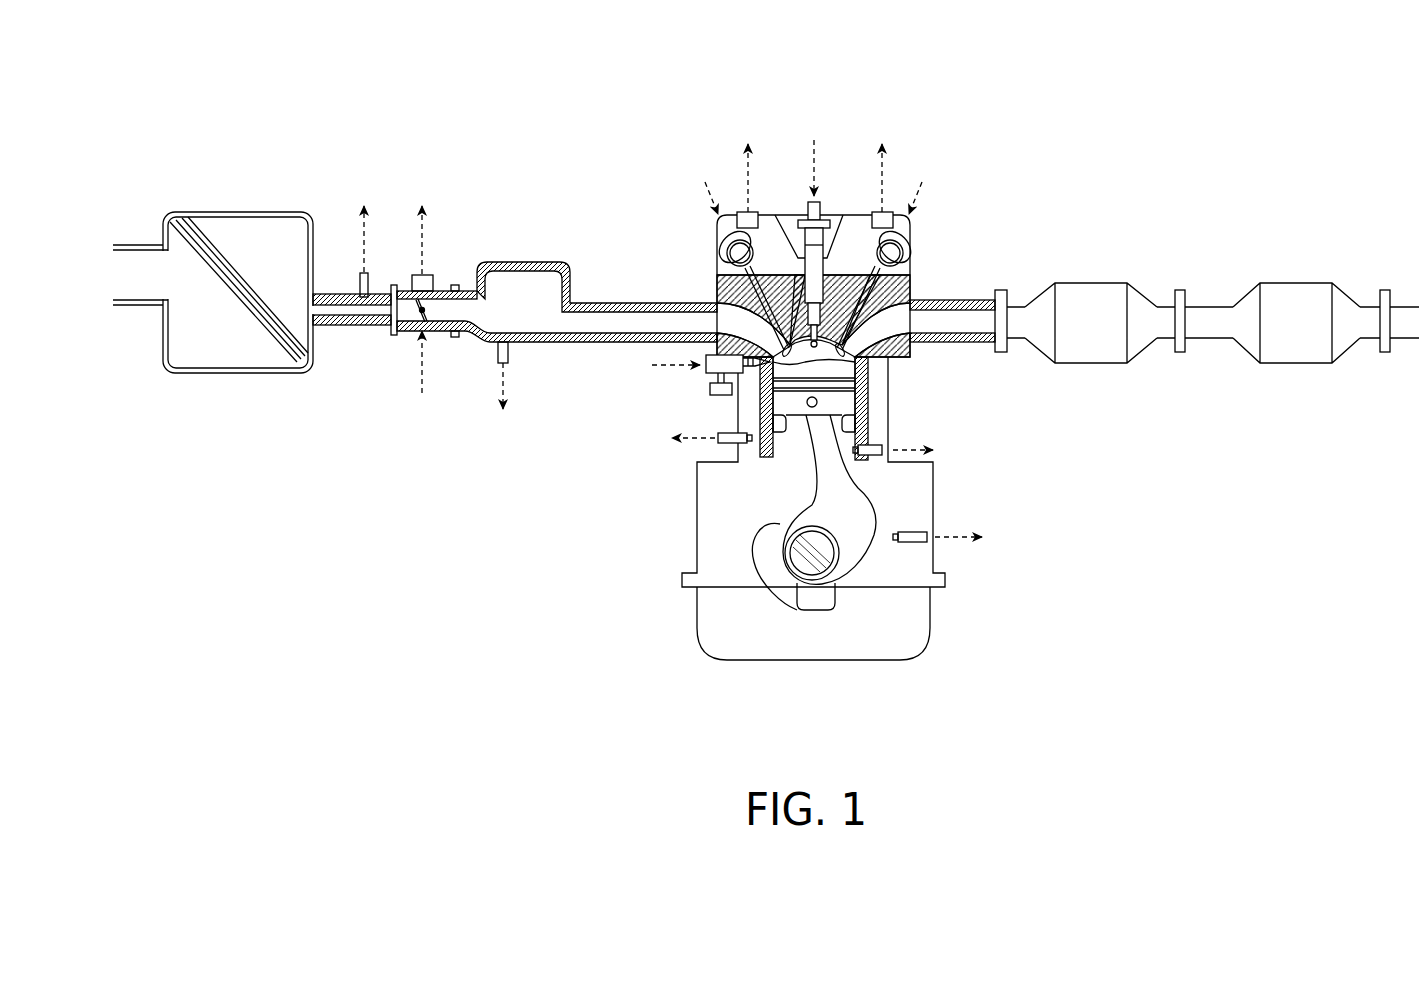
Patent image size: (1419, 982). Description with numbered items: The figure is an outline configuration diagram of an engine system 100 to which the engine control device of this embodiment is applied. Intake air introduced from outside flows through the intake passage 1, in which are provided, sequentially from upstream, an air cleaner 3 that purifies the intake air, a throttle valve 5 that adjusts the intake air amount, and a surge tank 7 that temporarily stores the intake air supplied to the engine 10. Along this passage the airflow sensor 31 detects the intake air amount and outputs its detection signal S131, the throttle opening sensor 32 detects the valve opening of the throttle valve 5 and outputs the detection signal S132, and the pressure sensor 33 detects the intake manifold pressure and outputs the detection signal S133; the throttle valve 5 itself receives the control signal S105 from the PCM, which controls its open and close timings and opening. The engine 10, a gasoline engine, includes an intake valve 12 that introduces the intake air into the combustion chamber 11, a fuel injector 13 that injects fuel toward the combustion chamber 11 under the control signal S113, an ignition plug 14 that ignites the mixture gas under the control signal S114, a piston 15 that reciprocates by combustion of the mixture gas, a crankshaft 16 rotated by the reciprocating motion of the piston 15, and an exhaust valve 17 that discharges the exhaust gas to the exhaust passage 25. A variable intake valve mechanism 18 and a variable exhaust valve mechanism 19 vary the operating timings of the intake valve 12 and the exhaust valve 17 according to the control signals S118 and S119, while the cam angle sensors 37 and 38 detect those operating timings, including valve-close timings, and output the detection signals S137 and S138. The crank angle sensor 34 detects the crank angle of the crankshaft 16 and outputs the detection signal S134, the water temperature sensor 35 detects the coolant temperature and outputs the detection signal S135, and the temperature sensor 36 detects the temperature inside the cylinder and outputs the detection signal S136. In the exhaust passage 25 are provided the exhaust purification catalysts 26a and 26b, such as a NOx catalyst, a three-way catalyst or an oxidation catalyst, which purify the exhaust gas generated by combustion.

The engine system 100 is at (1094, 217).
The air cleaner 3 is at (197, 212).
The intake passage 1 is at (366, 326).
The airflow sensor 31 is at (360, 280).
The detection signal S131 is at (361, 215).
The throttle opening sensor 32 is at (430, 276).
The detection signal S132 is at (426, 216).
The throttle valve 5 is at (427, 320).
The control signal S105 is at (421, 376).
The surge tank 7 is at (522, 262).
The pressure sensor 33 is at (508, 350).
The detection signal S133 is at (503, 405).
The intake valve 12 is at (750, 316).
The engine 10 is at (922, 664).
The combustion chamber 11 is at (830, 357).
The piston 15 is at (852, 405).
The crankshaft 16 is at (805, 575).
The variable intake valve mechanism 18 is at (727, 253).
The variable exhaust valve mechanism 19 is at (903, 253).
The cam angle sensor 37 is at (755, 212).
The detection signal S137 is at (742, 159).
The cam angle sensor 38 is at (877, 212).
The detection signal S138 is at (888, 159).
The control signal S118 is at (701, 181).
The control signal S119 is at (925, 181).
The ignition plug 14 is at (823, 258).
The control signal S114 is at (816, 153).
The fuel injector 13 is at (706, 380).
The control signal S113 is at (647, 364).
The water temperature sensor 35 is at (725, 445).
The detection signal S135 is at (663, 439).
The temperature sensor 36 is at (878, 462).
The detection signal S136 is at (945, 451).
The crank angle sensor 34 is at (917, 545).
The detection signal S134 is at (988, 536).
The exhaust valve 17 is at (860, 352).
The exhaust passage 25 is at (962, 343).
The exhaust purification catalyst 26a is at (1093, 283).
The exhaust purification catalyst 26b is at (1298, 283).